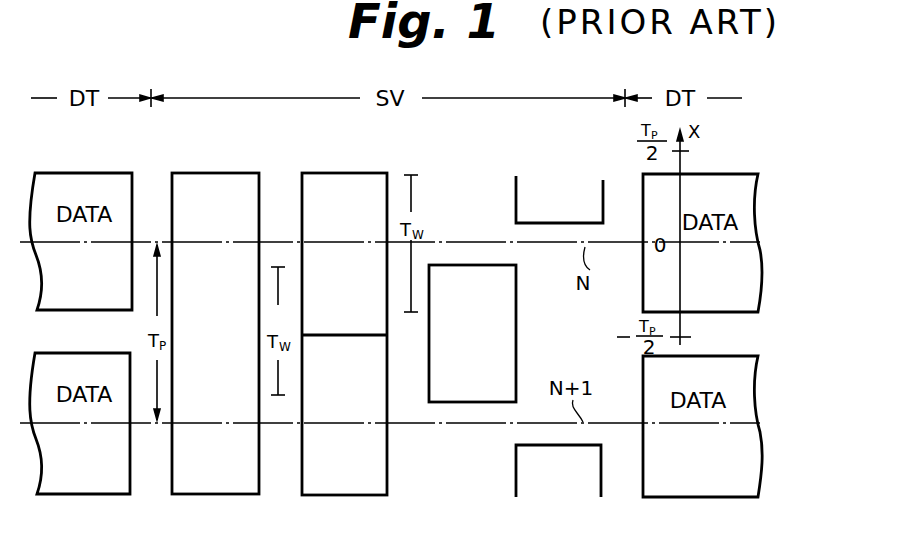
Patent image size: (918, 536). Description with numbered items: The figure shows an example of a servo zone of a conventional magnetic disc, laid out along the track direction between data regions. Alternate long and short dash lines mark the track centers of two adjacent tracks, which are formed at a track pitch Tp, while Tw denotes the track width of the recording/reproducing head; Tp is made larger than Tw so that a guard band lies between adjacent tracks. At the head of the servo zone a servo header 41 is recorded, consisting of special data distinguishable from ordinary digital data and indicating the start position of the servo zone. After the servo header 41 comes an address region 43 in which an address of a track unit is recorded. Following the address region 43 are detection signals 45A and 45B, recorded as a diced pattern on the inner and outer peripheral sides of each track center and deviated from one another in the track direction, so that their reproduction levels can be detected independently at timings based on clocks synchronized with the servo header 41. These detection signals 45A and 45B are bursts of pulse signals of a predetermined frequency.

The servo header 41 is at (215, 333).
The address region 43 is at (344, 334).
The detection signal 45A is at (472, 333).
The detection signal 45B is at (559, 336).